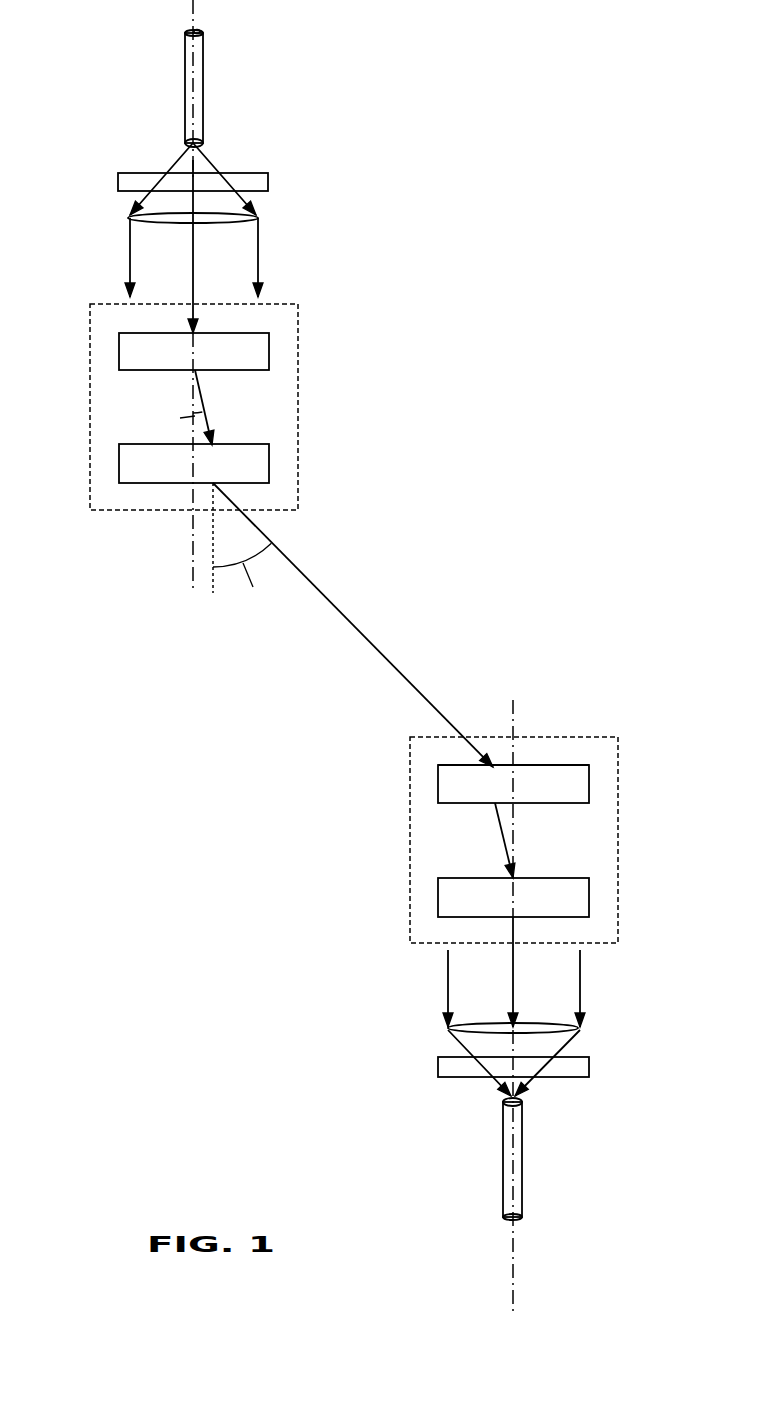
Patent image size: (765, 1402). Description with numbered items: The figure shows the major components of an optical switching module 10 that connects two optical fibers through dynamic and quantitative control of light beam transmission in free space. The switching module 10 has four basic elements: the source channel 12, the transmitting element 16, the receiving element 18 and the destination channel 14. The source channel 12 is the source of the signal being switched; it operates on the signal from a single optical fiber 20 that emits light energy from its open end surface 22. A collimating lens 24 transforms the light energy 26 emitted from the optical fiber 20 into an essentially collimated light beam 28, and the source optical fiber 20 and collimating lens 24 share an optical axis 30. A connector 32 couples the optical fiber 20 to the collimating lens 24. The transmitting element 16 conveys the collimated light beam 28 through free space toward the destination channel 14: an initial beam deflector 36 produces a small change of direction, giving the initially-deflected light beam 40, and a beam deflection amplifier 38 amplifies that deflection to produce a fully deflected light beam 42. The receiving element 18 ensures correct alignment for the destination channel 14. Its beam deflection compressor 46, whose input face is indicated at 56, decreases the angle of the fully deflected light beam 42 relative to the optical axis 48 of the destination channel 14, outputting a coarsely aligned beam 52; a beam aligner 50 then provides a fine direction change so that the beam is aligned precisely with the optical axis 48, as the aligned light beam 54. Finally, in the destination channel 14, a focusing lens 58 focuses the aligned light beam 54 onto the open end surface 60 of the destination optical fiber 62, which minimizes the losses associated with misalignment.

The switching module 10 is at (422, 453).
The source channel 12 is at (118, 115).
The destination channel 14 is at (618, 1077).
The transmitting element 16 is at (298, 332).
The receiving element 18 is at (619, 755).
The optical fiber 20 is at (205, 52).
The open end surface 22 is at (185, 140).
The collimating lens 24 is at (185, 226).
The light energy 26 is at (252, 208).
The collimated light beam 28 is at (263, 258).
The optical axis 30 is at (196, 160).
The connector 32 is at (268, 182).
The initial beam deflector 36 is at (233, 371).
The beam deflection amplifier 38 is at (236, 444).
The initially-deflected light beam 40 is at (207, 414).
The fully deflected light beam 42 is at (296, 566).
The beam deflection compressor 46 is at (550, 804).
The optical axis 48 is at (515, 712).
The beam aligner 50 is at (549, 878).
The coarsely aligned beam 52 is at (500, 833).
The aligned light beam 54 is at (515, 984).
The third prism input face 56 is at (540, 765).
The focusing lens 58 is at (505, 1023).
The open end surface 60 is at (522, 1105).
The destination optical fiber 62 is at (522, 1172).